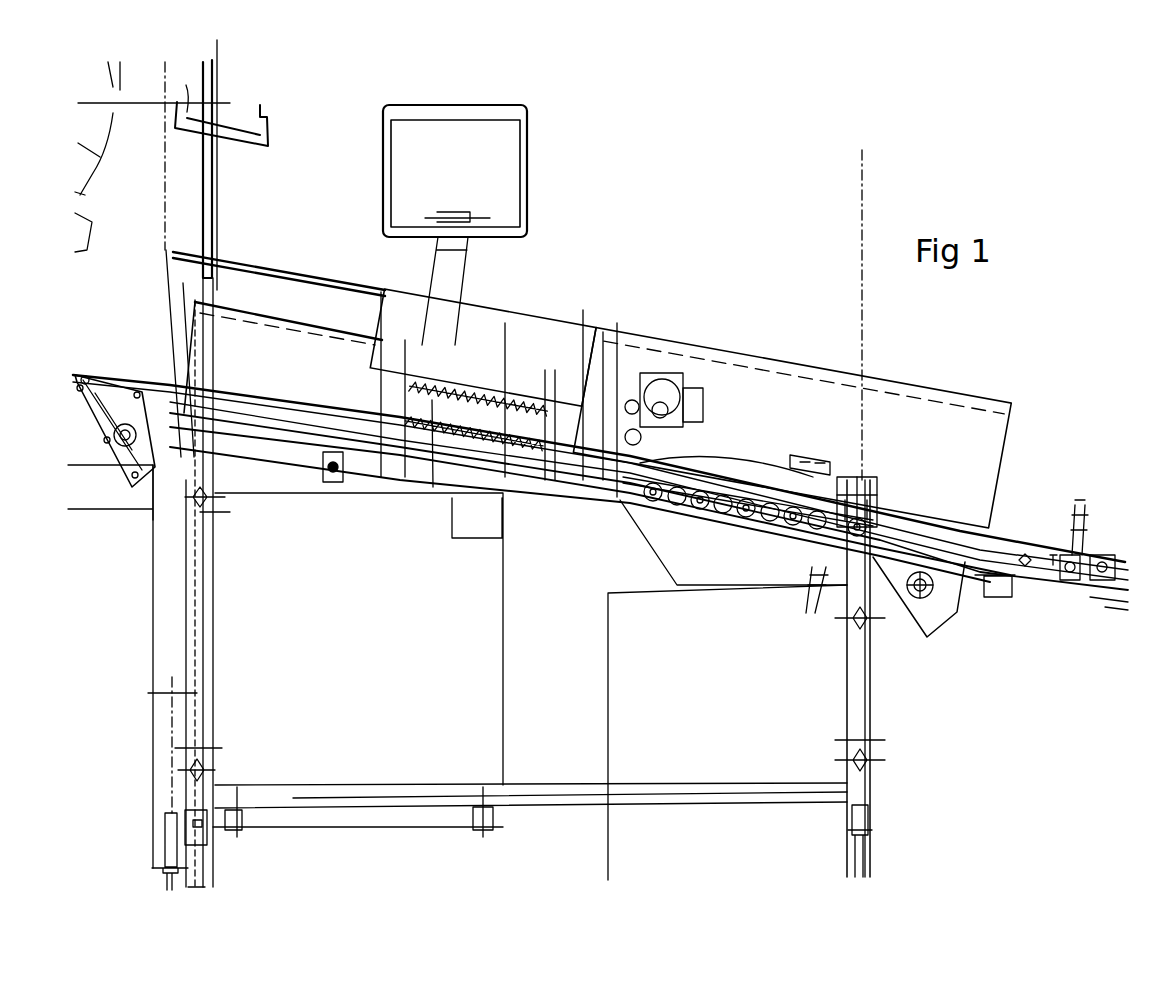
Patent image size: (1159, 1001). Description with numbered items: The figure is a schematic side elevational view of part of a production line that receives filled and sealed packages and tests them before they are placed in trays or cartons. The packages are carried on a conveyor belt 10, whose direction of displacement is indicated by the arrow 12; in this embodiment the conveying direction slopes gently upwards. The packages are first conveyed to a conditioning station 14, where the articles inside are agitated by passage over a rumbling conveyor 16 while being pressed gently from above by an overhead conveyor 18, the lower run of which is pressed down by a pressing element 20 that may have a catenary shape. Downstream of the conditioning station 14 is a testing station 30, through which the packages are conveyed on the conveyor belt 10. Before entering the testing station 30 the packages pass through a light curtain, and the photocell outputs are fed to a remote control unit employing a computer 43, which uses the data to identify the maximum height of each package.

The conveyor belt 10 is at (122, 367).
The arrow 12 is at (107, 369).
The conditioning station 14 is at (795, 358).
The rumbling conveyor 16 is at (679, 518).
The overhead conveyor 18 is at (828, 443).
The pressing element 20 is at (723, 473).
The testing station 30 is at (565, 325).
The computer 43 is at (527, 198).